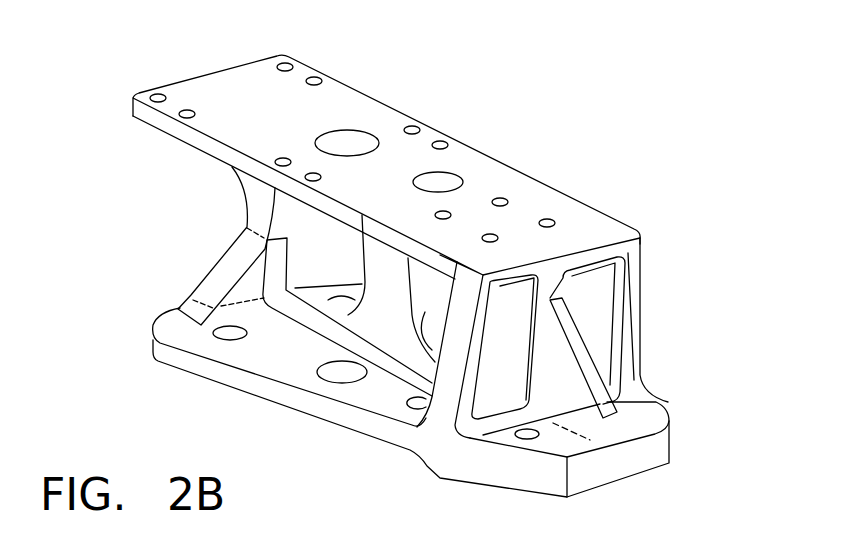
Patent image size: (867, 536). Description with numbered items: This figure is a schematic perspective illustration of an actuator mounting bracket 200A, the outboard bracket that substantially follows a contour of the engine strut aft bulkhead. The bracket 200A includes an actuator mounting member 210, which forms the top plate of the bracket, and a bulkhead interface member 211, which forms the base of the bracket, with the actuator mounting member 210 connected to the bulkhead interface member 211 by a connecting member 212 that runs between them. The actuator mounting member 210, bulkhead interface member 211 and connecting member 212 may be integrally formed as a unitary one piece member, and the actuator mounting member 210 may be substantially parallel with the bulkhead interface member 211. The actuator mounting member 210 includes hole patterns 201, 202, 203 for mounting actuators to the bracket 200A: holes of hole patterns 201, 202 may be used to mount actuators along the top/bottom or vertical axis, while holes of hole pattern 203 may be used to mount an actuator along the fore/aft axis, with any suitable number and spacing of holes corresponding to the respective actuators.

The bracket 200A is at (444, 259).
The hole pattern 201 is at (318, 59).
The hole pattern 202 is at (462, 121).
The hole pattern 203 is at (523, 198).
The actuator mounting member 210 is at (372, 106).
The bulkhead interface member 211 is at (183, 357).
The connecting member 212 is at (238, 264).